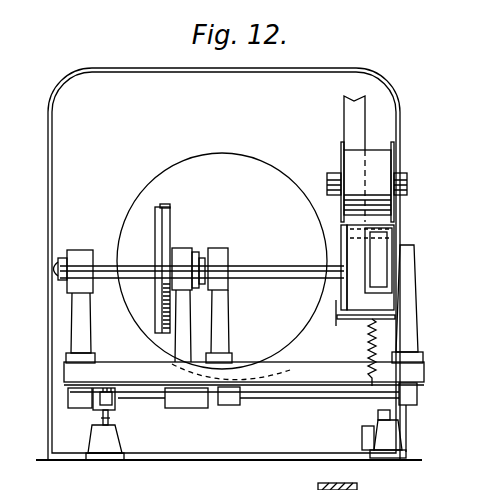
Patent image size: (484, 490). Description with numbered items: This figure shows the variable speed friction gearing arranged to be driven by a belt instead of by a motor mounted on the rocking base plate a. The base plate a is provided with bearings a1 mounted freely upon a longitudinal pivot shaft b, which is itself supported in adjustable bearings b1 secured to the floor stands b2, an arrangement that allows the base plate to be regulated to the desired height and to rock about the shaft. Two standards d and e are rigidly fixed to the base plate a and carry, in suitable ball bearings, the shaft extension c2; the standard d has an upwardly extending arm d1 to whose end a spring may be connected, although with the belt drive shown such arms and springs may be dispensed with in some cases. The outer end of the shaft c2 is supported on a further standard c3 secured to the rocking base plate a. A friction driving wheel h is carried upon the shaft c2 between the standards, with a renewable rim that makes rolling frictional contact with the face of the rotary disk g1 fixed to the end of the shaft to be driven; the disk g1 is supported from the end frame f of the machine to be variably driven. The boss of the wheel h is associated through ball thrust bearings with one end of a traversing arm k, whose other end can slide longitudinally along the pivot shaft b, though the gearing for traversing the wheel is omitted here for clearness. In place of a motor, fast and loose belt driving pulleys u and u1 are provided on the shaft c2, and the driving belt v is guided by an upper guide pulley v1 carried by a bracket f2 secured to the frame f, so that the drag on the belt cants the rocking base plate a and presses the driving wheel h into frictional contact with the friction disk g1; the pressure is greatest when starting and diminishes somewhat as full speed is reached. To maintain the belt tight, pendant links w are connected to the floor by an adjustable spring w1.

The machine frame f is at (229, 264).
The rotary disk g1 is at (222, 261).
The rocking base plate a is at (244, 380).
The bearings a1 is at (82, 410).
The adjustable bearings b1 is at (116, 406).
The floor stands b2 is at (124, 438).
The pivot shaft b is at (299, 410).
The upwardly extending arm d1 is at (417, 394).
The standard e is at (92, 327).
The shaft extension c2 is at (108, 282).
The friction driving wheel h is at (171, 222).
The traversing arm k is at (190, 308).
The standard d is at (229, 310).
The driving belt v is at (342, 159).
The upper guide pulley v1 is at (367, 182).
The bracket f2 is at (327, 182).
The fast belt driving pulley u is at (367, 267).
The loose belt driving pulley u1 is at (385, 272).
The pendant links w is at (337, 317).
The adjustable spring w1 is at (368, 342).
The pedestal c3 is at (414, 309).